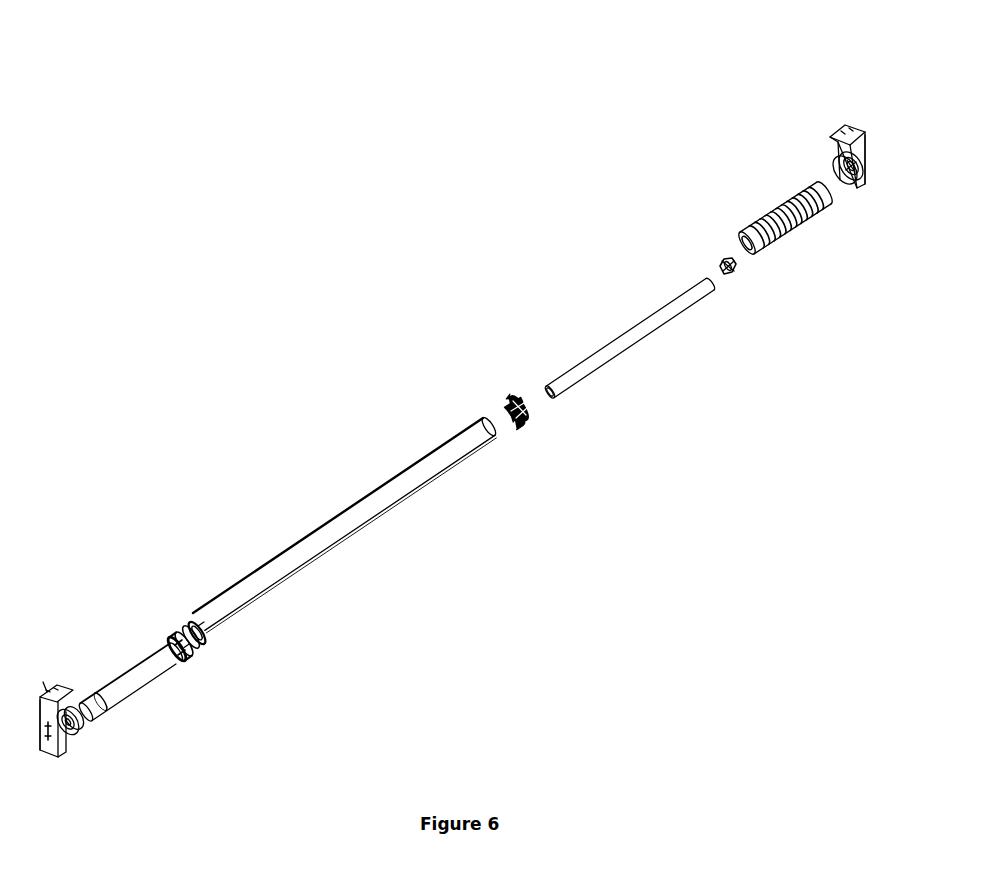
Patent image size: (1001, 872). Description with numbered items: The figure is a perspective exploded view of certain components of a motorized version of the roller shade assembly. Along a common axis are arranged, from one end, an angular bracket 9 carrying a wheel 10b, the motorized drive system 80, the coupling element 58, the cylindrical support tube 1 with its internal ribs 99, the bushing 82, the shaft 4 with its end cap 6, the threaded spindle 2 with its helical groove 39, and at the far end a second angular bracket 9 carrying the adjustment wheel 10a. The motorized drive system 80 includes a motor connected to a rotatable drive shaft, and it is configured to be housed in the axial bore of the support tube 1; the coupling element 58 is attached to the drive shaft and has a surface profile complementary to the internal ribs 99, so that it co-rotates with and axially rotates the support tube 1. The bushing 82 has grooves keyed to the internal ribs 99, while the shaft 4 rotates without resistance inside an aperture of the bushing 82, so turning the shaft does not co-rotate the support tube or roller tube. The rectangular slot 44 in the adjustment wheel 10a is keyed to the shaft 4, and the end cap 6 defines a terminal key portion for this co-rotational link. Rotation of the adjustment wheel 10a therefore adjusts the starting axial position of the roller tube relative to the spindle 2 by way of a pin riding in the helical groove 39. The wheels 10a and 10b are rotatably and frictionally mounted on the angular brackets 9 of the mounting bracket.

The support tube 1 is at (378, 488).
The spindle 2 is at (779, 190).
The shaft 4 is at (607, 333).
The end cap 6 is at (729, 282).
The angular bracket 9 is at (840, 126).
The adjustment wheel 10a is at (860, 190).
The wheel 10b is at (76, 741).
The helical groove 39 is at (770, 244).
The slot 44 is at (842, 186).
The coupling element 58 is at (174, 628).
The motorized drive system 80 is at (133, 664).
The bushing 82 is at (507, 388).
The internal ribs 99 is at (202, 646).